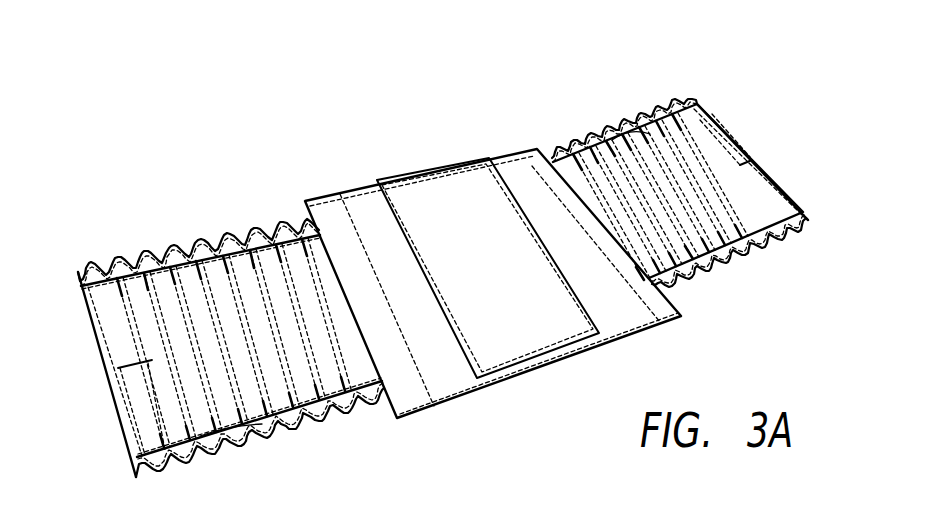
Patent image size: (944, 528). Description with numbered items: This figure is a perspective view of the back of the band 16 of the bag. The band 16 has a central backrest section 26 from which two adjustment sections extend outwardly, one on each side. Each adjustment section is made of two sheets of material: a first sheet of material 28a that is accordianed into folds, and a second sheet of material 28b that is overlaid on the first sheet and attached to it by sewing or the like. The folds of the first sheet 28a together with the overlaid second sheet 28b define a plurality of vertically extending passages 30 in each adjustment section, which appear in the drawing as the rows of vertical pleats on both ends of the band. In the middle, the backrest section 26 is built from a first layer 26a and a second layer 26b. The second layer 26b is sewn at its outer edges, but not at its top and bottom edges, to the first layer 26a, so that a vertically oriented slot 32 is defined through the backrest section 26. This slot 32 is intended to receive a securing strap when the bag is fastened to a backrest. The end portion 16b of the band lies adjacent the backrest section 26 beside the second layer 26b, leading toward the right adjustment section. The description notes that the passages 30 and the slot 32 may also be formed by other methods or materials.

The band 16 is at (755, 90).
The end portion of band 16b is at (657, 310).
The backrest section 26 is at (413, 402).
The first layer 26a is at (360, 206).
The second layer 26b is at (500, 273).
The first sheet of material 28a is at (147, 466).
The second sheet of material 28b is at (150, 361).
The passages 30 is at (260, 420).
The slot 32 is at (537, 357).